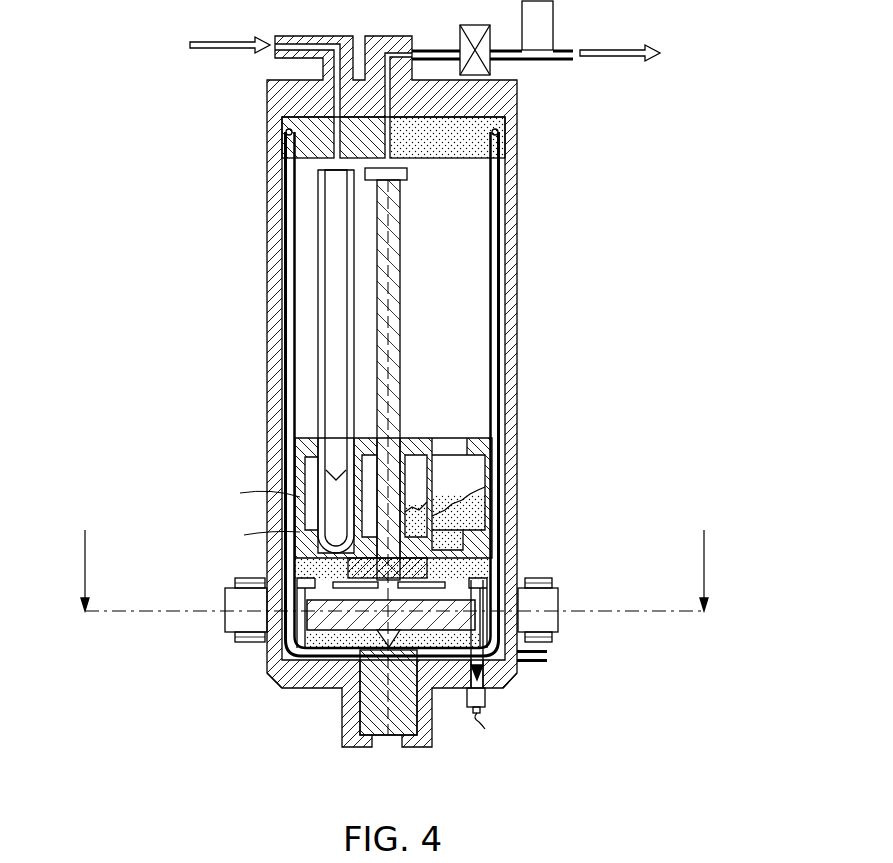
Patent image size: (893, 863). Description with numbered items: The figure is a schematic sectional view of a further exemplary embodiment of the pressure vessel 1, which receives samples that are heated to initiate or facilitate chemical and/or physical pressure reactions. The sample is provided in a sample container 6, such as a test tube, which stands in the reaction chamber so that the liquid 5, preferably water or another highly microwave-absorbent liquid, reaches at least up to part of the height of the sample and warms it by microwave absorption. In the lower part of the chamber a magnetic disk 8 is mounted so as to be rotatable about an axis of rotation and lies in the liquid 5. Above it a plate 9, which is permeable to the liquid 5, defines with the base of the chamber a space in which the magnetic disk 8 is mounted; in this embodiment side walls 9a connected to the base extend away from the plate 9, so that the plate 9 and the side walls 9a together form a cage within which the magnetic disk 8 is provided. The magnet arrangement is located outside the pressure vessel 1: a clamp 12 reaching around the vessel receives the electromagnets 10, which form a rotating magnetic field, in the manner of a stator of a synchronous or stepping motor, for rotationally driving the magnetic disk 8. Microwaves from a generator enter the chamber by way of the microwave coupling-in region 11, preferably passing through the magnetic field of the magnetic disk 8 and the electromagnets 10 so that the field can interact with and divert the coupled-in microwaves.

The pressure vessel 1 is at (663, 222).
The liquid 5 is at (330, 684).
The sample container 6 is at (330, 215).
The magnetic disk 8 is at (437, 690).
The plate 9 is at (517, 528).
The side walls 9a is at (283, 690).
The electromagnet 10 is at (240, 643).
The microwave coupling-in region 11 is at (365, 720).
The clamp 12 is at (550, 581).